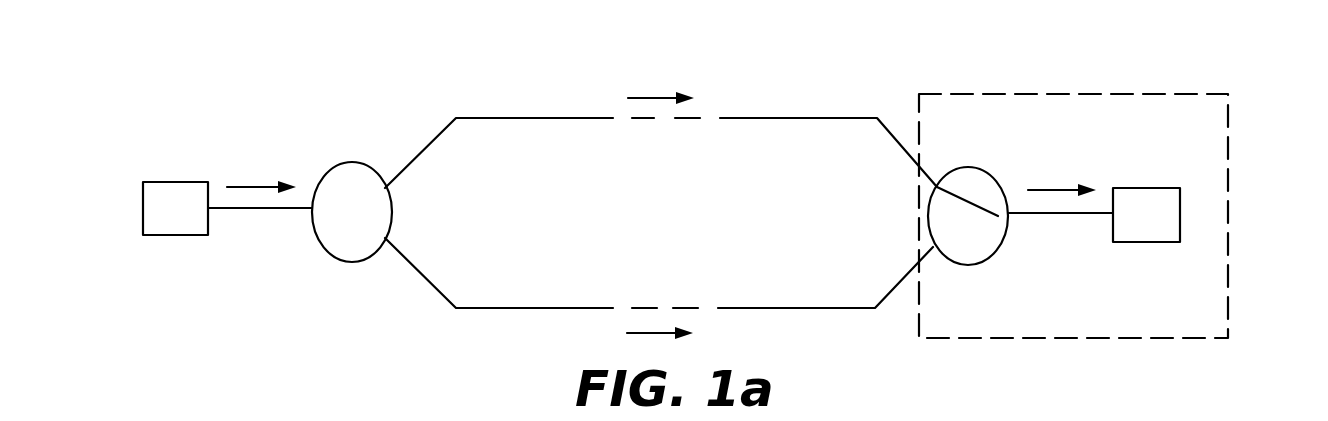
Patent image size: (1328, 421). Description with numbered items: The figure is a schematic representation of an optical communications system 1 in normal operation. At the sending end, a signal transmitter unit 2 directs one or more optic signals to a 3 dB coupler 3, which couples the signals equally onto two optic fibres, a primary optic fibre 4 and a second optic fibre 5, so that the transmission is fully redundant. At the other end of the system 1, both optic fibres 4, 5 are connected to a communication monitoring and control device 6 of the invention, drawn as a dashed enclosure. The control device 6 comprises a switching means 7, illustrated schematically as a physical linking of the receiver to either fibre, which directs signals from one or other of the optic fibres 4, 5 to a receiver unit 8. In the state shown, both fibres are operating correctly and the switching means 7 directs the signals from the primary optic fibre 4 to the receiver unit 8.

The optical communications system 1 is at (700, 58).
The signal transmitter unit 2 is at (170, 182).
The 3 dB coupler 3 is at (350, 163).
The primary optic fibre 4 is at (486, 118).
The second optic fibre 5 is at (487, 308).
The communication monitoring and control device 6 is at (1228, 213).
The switching means 7 is at (1000, 252).
The receiver unit 8 is at (1138, 188).